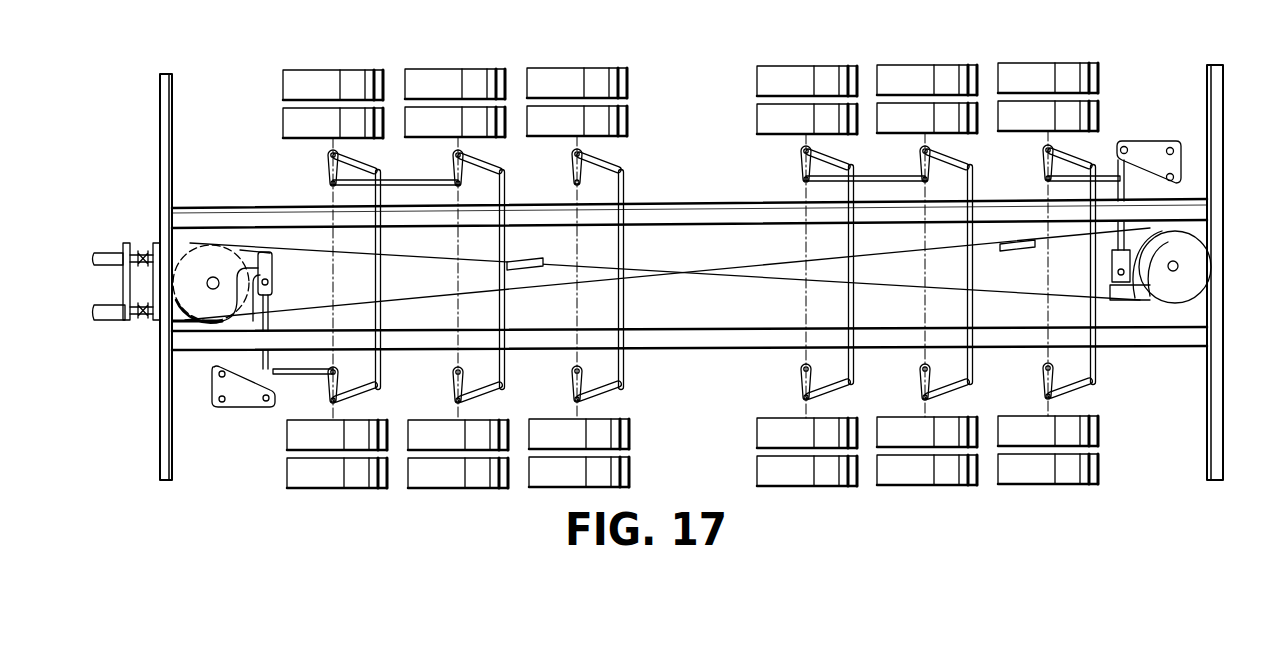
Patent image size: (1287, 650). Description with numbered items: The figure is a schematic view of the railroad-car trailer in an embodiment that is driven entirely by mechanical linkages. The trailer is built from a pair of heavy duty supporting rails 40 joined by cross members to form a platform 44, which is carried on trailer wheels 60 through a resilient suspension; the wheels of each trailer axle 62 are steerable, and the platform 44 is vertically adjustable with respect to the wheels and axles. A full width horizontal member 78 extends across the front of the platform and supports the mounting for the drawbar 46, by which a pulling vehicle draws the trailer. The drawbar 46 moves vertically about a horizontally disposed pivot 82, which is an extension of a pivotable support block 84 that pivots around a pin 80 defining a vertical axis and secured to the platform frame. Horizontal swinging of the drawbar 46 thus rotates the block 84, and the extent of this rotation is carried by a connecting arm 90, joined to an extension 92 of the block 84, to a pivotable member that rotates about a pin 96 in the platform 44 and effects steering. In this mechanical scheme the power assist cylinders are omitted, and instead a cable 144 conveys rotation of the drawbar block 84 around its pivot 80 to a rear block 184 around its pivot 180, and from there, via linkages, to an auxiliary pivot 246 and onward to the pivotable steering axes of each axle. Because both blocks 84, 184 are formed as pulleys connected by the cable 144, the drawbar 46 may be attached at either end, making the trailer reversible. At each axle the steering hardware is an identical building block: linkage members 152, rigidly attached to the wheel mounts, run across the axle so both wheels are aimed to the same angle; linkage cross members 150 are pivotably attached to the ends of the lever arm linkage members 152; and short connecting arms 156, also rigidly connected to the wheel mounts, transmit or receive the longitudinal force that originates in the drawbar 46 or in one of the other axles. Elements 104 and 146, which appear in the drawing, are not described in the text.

The supporting rails 40 is at (731, 225).
The platform 44 is at (674, 204).
The drawbar 46 is at (118, 322).
The trailer wheels 60 is at (370, 69).
The axles 62 is at (333, 256).
The horizontal member 78 is at (160, 153).
The pin 80 is at (214, 289).
The pivot 82 is at (147, 252).
The pivotable support block 84 is at (208, 245).
The connecting arm 90 is at (272, 284).
The extension 92 is at (256, 262).
The pin 96 is at (222, 403).
The crank arm 104 is at (328, 155).
The cable 144 is at (718, 261).
The plate 146 is at (244, 403).
The linkage cross members 150 is at (381, 262).
The linkage members 152 is at (362, 157).
The short connecting arms 156 is at (433, 181).
The pivot 180 is at (1172, 273).
The rear block 184 is at (1212, 256).
The auxiliary pivot 246 is at (1152, 142).